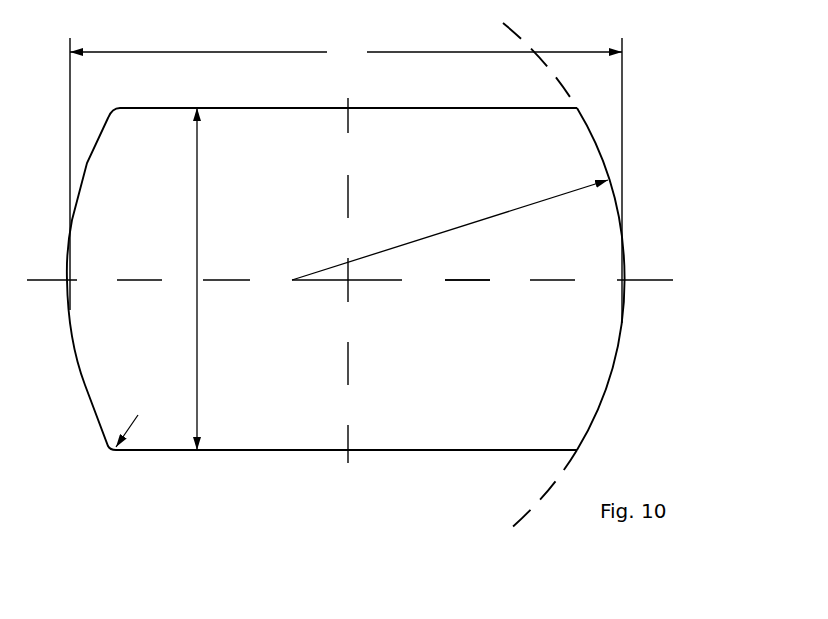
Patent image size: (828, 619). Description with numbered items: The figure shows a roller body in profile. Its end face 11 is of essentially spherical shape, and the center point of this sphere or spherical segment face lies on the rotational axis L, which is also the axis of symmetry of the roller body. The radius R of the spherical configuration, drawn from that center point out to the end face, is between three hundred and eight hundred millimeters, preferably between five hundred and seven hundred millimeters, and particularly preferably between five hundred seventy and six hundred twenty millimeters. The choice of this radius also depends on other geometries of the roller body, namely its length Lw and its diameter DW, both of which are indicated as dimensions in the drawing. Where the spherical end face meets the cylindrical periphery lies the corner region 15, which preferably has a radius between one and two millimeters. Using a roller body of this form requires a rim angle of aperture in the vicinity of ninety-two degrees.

The end face 11 is at (628, 226).
The corner region 15 is at (580, 451).
The length of the roller body Lw is at (346, 42).
The diameter of the roller body DW is at (217, 279).
The radius of the spherical configuration R is at (450, 230).
The rotational axis L is at (467, 295).